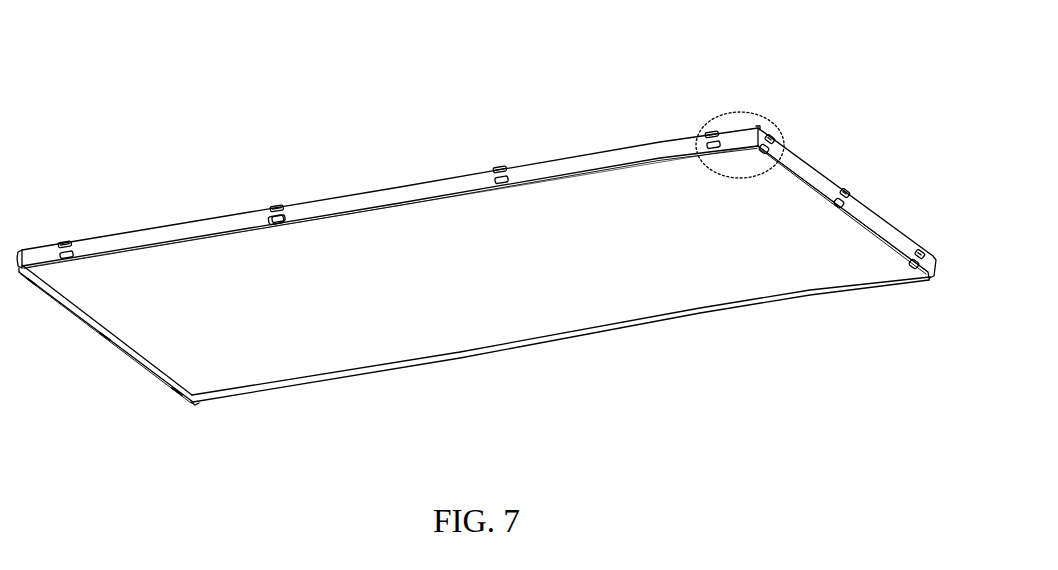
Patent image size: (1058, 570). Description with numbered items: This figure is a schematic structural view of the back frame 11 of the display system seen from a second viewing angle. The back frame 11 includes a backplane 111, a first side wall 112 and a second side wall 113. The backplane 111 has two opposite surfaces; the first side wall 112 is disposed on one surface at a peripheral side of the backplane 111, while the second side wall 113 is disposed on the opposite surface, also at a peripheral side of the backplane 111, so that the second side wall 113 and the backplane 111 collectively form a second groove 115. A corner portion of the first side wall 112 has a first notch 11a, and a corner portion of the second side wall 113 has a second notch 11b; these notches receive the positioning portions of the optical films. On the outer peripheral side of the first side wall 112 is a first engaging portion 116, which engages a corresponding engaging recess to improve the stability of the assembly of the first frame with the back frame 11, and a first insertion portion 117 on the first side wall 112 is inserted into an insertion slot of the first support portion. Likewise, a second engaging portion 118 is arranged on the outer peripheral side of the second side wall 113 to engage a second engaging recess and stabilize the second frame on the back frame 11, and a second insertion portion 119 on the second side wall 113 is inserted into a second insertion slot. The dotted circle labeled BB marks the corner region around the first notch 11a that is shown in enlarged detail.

The back frame 11 is at (476, 245).
The first notch 11a is at (766, 103).
The second notch 11b is at (195, 427).
The backplane 111 is at (628, 298).
The first side wall 112 is at (404, 187).
The second side wall 113 is at (378, 373).
The second groove 115 is at (498, 342).
The first engaging portion 116 is at (271, 205).
The first insertion portion 117 is at (502, 168).
The second engaging portion 118 is at (267, 220).
The second insertion portion 119 is at (675, 320).
The detail region BB is at (720, 115).